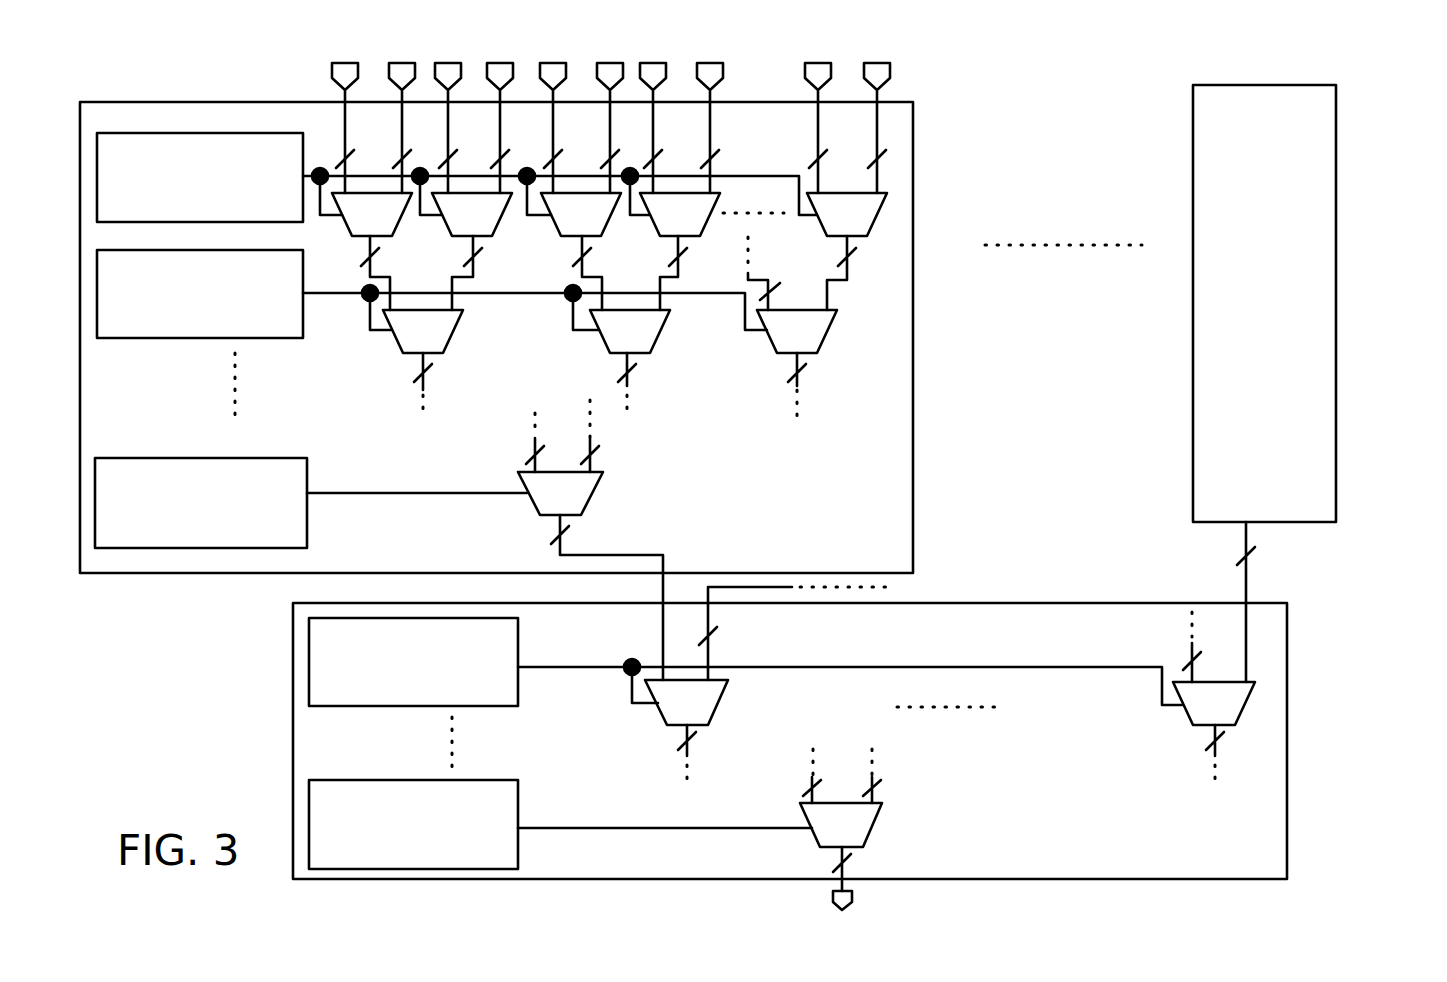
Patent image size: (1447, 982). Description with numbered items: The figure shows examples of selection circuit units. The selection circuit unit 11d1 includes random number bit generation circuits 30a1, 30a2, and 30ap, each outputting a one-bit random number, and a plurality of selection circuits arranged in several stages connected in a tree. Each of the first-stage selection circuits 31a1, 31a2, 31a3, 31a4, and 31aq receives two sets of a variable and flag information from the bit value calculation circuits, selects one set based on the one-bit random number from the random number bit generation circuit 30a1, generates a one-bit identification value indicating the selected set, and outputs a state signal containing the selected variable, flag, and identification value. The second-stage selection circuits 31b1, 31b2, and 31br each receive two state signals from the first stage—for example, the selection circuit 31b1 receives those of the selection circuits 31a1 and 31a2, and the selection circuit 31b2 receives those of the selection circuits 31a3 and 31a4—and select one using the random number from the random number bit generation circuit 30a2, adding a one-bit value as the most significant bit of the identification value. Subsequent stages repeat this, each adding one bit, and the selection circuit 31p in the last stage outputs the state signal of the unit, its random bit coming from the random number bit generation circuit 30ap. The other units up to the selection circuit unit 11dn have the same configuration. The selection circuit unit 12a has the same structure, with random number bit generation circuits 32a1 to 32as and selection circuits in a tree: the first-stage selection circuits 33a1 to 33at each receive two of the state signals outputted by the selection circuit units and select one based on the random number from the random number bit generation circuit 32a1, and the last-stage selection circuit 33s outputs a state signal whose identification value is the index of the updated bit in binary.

The selection circuit unit 11d1 is at (913, 103).
The selection circuit unit 11dn is at (1337, 103).
The selection circuit unit 12a is at (1287, 625).
The random number bit generation circuit 30a1 is at (203, 133).
The random number bit generation circuit 30a2 is at (185, 250).
The random number bit generation circuit 30ap is at (185, 458).
The selection circuit 31a1 is at (344, 227).
The selection circuit 31a2 is at (446, 226).
The selection circuit 31a3 is at (558, 226).
The selection circuit 31a4 is at (654, 226).
The selection circuit 31aq is at (821, 227).
The selection circuit 31b1 is at (452, 333).
The selection circuit 31b2 is at (650, 345).
The selection circuit 31br is at (832, 328).
The selection circuit 31p is at (590, 497).
The random number bit generation circuit 32a1 is at (520, 642).
The random number bit generation circuit 32as is at (520, 802).
The selection circuit 33a1 is at (725, 683).
The selection circuit 33at is at (1182, 710).
The selection circuit 33s is at (873, 822).